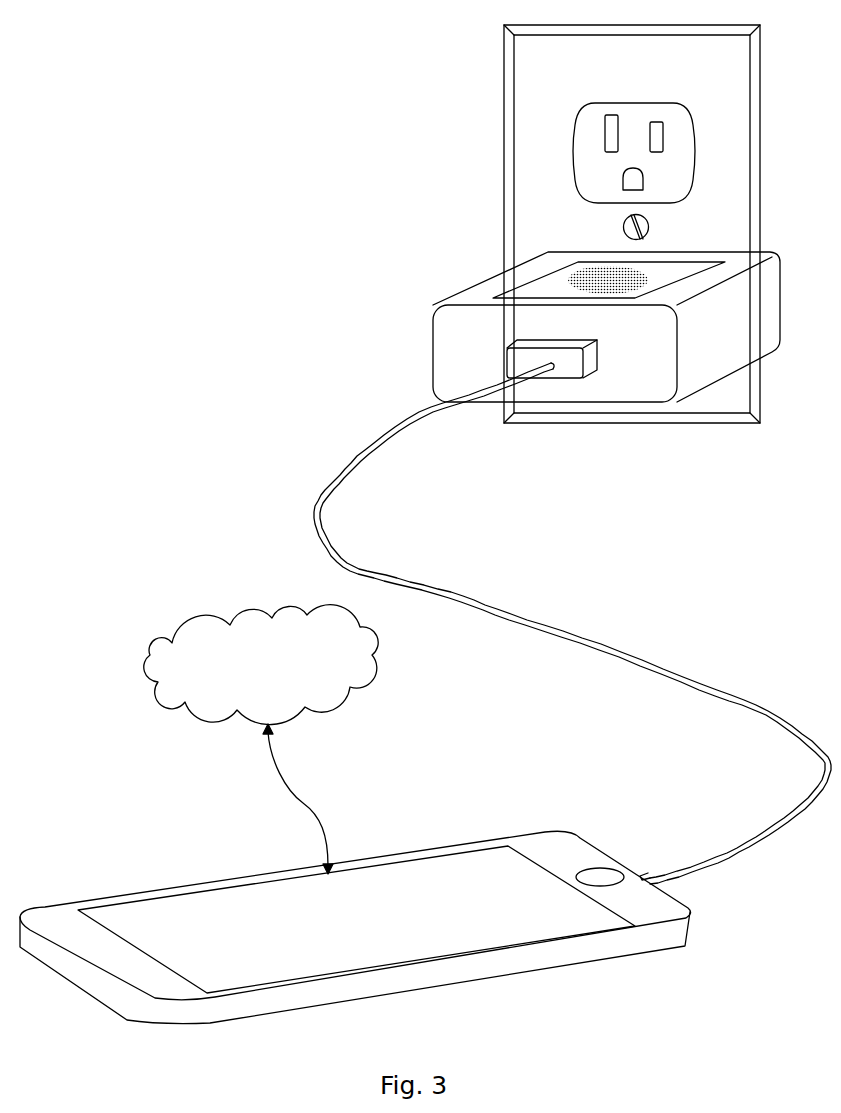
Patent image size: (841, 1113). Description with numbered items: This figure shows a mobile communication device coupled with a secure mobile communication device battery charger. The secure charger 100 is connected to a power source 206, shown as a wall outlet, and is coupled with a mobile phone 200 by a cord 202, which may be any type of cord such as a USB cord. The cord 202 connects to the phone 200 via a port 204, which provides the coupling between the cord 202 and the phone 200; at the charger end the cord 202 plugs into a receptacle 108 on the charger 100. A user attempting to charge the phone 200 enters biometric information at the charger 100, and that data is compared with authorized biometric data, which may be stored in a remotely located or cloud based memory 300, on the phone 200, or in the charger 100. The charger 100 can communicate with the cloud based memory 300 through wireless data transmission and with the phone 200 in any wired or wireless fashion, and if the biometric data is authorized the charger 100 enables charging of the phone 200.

The secure mobile device charger 100 is at (410, 293).
The USB port 108 is at (575, 373).
The mobile phone 200 is at (208, 885).
The cord 202 is at (310, 506).
The port 204 is at (643, 876).
The power source 206 is at (543, 146).
The cloud based memory 300 is at (261, 739).